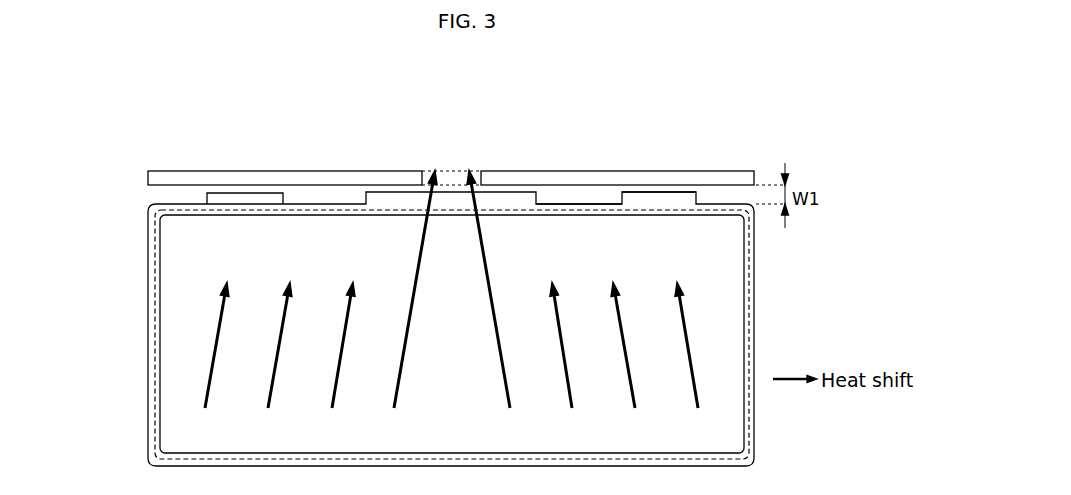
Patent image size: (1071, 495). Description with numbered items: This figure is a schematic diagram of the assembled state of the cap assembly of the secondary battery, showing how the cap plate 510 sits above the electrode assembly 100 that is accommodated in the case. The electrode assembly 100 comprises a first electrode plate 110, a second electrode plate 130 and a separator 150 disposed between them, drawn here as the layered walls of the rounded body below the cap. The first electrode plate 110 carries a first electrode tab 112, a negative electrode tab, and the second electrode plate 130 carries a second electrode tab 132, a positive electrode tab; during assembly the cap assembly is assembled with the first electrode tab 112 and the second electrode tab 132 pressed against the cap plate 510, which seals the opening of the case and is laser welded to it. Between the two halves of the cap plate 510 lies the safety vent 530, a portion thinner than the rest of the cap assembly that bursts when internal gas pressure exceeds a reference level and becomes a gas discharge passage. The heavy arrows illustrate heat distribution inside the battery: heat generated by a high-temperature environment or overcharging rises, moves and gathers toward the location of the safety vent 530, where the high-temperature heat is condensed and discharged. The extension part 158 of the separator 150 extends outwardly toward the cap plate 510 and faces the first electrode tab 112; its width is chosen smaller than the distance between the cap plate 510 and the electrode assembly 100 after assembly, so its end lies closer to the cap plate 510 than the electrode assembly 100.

The electrode assembly 100 is at (75, 249).
The first electrode plate 110 is at (156, 257).
The separator 150 is at (153, 303).
The second electrode plate 130 is at (179, 348).
The first electrode tab 112 is at (238, 193).
The cap plate 510 is at (328, 178).
The safety vent 530 is at (451, 168).
The extension part 158 is at (518, 196).
The second electrode tab 132 is at (657, 200).